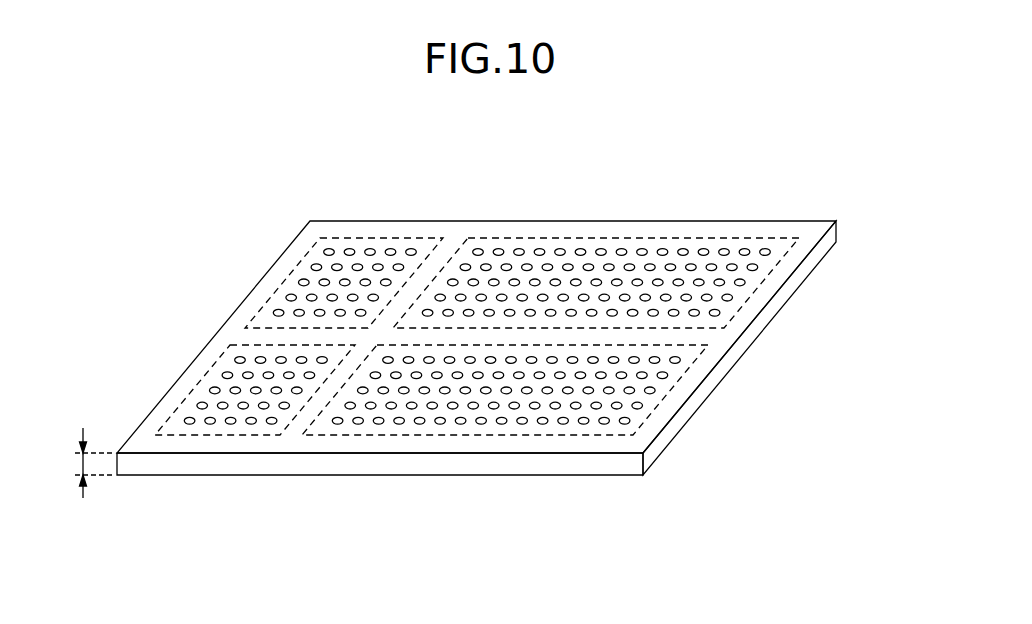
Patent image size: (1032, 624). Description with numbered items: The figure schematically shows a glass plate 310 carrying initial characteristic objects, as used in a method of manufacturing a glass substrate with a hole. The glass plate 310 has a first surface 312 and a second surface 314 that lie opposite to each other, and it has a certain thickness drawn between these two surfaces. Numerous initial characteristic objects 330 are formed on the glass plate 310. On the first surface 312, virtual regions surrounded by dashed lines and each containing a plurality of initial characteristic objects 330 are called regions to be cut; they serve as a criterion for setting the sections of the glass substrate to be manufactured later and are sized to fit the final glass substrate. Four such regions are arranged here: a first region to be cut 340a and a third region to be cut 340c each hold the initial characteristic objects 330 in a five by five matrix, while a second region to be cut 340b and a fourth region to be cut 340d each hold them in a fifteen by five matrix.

The glass plate 310 is at (513, 334).
The first surface 312 is at (722, 230).
The second surface 314 is at (300, 437).
The initial characteristic objects 330 is at (414, 240).
The first region to be cut 340a is at (361, 230).
The second region to be cut 340b is at (610, 230).
The third region to be cut 340c is at (224, 447).
The fourth region to be cut 340d is at (493, 447).